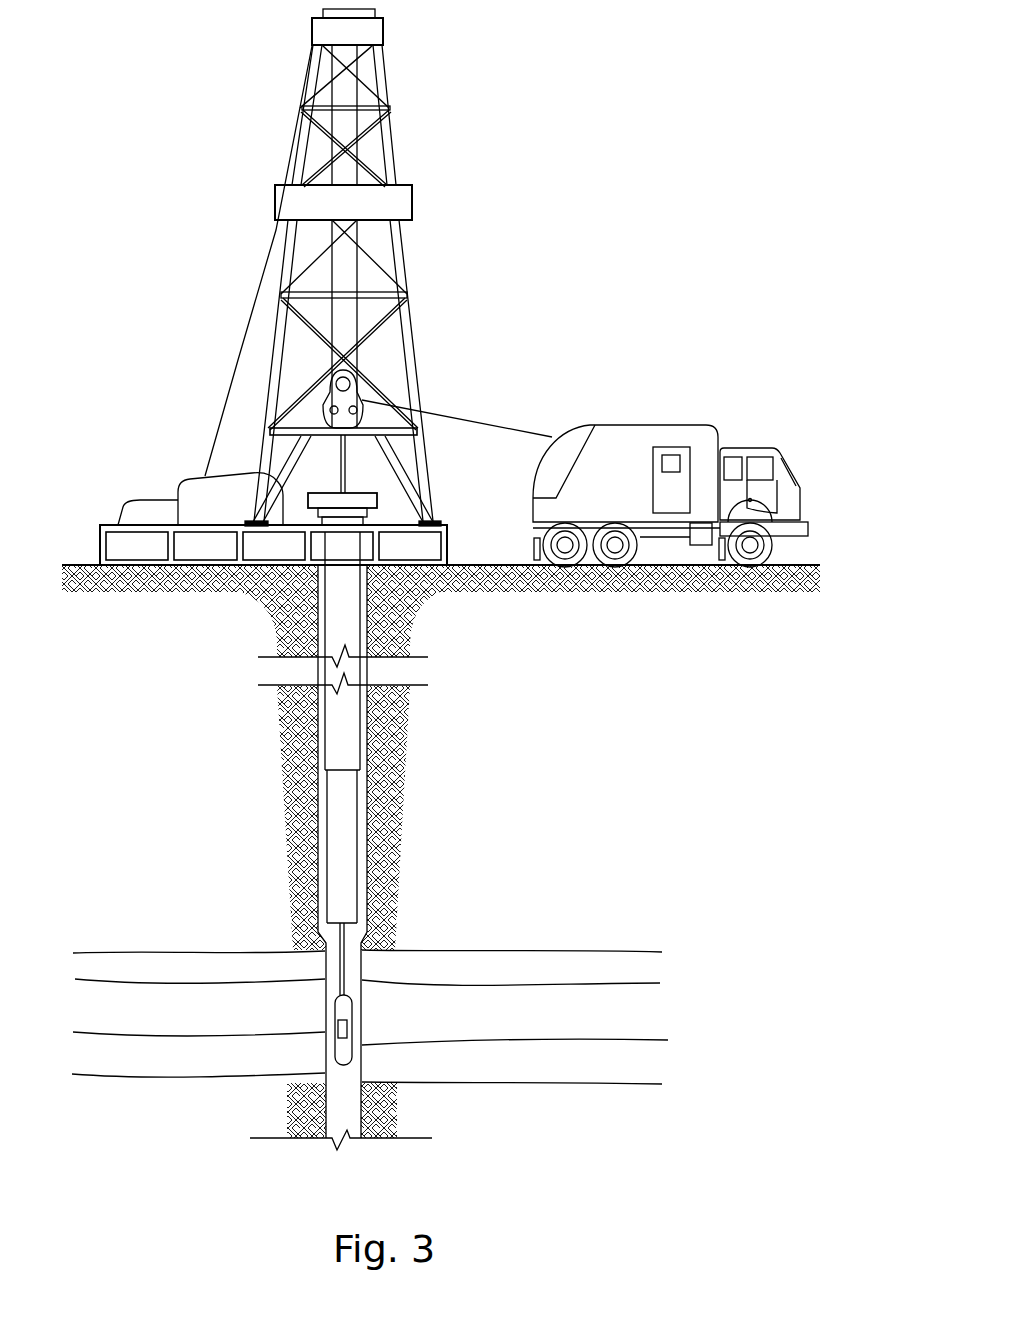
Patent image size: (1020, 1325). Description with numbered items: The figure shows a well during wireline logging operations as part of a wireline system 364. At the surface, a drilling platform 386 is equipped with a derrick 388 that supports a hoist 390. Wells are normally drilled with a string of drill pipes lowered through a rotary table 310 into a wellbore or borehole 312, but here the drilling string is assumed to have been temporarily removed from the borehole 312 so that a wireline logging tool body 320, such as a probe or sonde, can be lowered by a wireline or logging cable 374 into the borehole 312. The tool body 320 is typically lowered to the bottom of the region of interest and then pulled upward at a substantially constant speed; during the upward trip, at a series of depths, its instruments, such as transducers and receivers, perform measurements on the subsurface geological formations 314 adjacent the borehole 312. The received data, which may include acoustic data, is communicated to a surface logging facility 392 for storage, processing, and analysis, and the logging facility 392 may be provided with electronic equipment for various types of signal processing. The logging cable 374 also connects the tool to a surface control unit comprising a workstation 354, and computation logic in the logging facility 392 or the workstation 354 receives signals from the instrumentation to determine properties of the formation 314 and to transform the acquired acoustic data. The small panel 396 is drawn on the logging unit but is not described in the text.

The system 364 is at (610, 207).
The derrick 388 is at (430, 513).
The hoist 390 is at (355, 380).
The wireline or logging cable 374 is at (463, 418).
The rotary table 310 is at (377, 490).
The drilling platform 386 is at (447, 557).
The surface logging facility 392 is at (617, 425).
The workstation 354 is at (653, 490).
The control system 396 is at (672, 453).
The wellbore or borehole 312 is at (325, 1010).
The wireline logging tool body 320 is at (352, 1012).
The subsurface geological formations 314 is at (673, 942).